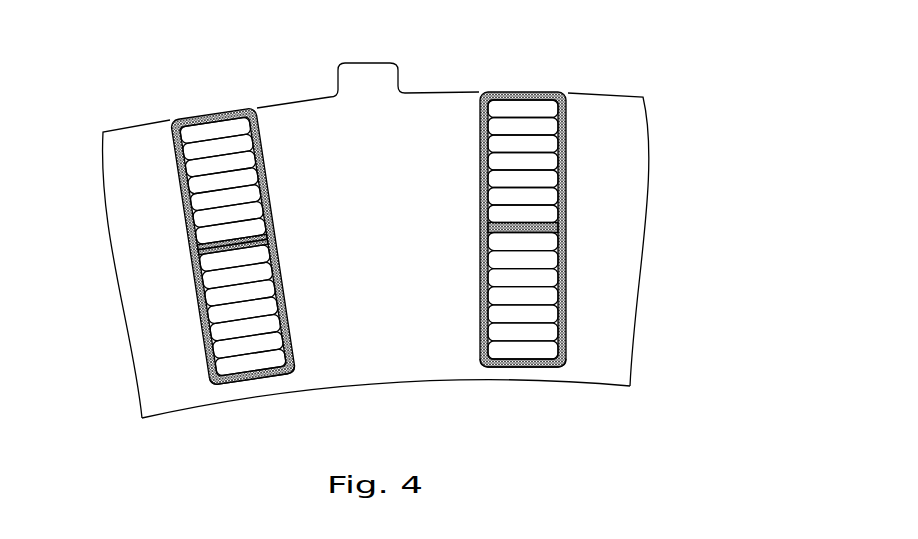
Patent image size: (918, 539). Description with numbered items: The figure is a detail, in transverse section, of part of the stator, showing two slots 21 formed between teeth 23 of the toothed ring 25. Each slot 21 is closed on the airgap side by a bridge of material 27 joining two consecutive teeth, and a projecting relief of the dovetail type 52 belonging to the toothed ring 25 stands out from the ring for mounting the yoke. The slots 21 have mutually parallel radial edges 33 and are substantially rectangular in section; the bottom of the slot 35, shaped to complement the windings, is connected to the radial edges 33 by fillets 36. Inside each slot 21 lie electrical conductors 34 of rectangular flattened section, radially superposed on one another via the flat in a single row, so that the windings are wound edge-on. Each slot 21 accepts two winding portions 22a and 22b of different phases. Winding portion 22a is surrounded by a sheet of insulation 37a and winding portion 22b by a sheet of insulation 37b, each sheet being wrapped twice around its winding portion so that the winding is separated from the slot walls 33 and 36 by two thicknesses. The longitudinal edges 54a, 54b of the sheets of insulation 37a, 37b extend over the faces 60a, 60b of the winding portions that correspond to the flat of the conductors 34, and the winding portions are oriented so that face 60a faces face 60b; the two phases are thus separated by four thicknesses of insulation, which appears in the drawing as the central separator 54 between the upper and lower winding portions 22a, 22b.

The slot 21 is at (376, 231).
The tooth 23 is at (368, 56).
The toothed ring 25 is at (123, 160).
The bridge of material 27 is at (533, 372).
The radial edge 33 is at (513, 267).
The electrical conductor 34 is at (268, 290).
The bottom of the slot 35 is at (267, 386).
The fillet 36 is at (480, 364).
The sheet of insulation 37a is at (270, 183).
The sheet of insulation 37b is at (287, 310).
The projecting relief of the dovetail type 52 is at (376, 78).
The phase separator 54 is at (520, 222).
The longitudinal edge 54a is at (233, 244).
The longitudinal edge 54b is at (215, 268).
The face 60a is at (190, 234).
The face 60b is at (200, 280).
The winding portion 22a is at (273, 172).
The winding portion 22b is at (298, 319).